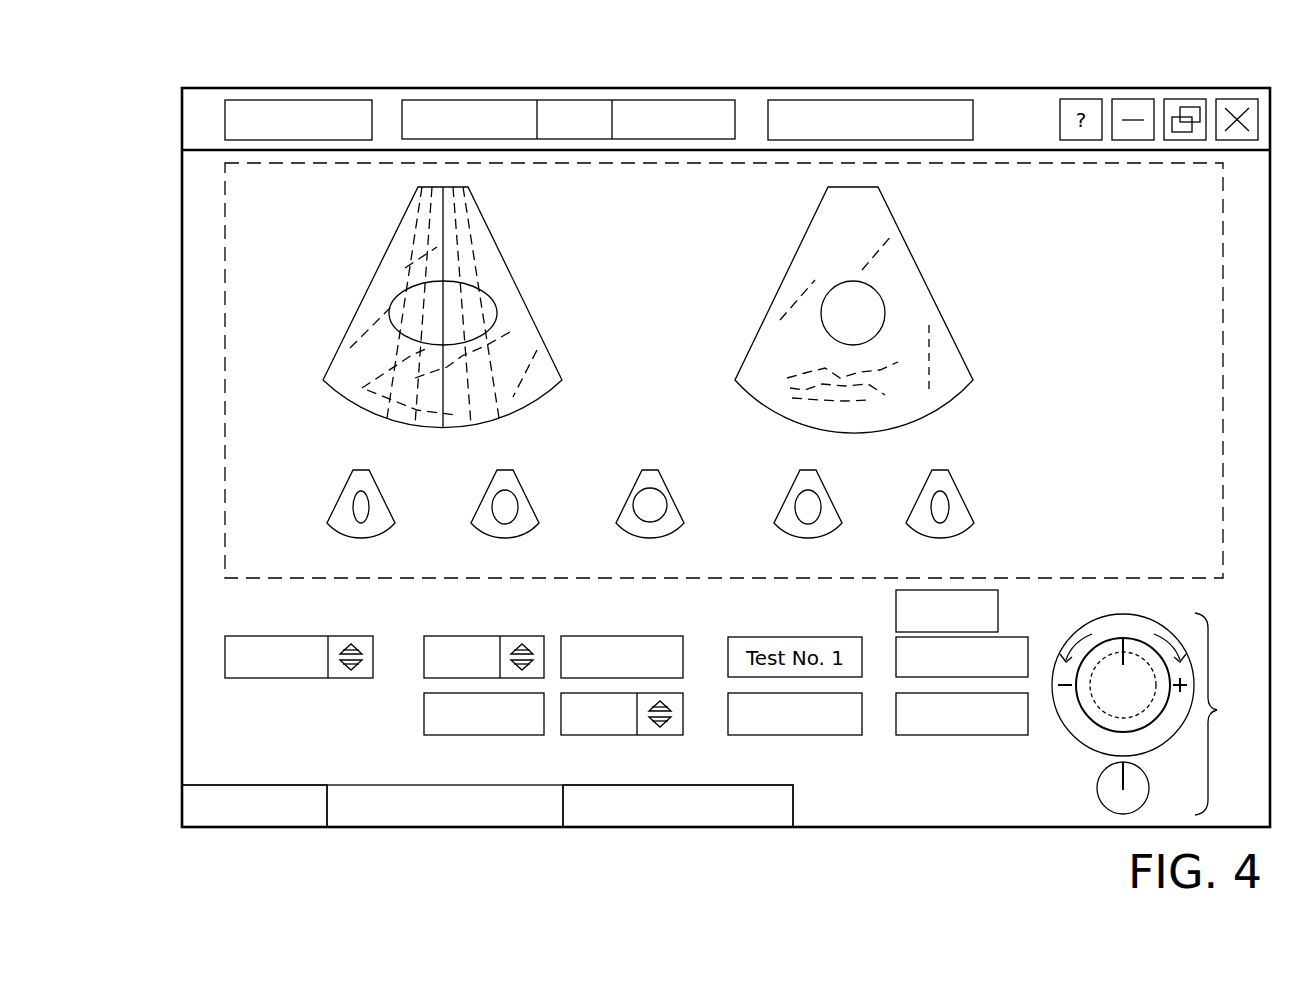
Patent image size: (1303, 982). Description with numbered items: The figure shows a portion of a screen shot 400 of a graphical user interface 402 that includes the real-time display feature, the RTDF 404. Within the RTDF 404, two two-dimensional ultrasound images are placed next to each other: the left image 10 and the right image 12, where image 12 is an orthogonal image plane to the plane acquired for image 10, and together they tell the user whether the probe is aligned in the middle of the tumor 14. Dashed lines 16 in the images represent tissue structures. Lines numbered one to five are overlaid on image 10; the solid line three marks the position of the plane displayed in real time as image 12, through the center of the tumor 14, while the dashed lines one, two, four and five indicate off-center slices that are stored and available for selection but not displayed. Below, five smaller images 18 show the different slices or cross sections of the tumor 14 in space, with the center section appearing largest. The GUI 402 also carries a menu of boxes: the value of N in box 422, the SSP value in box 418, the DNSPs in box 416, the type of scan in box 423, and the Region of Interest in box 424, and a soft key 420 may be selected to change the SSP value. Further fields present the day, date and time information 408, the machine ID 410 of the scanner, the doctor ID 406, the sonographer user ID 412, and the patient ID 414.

The screen shot 400 is at (154, 95).
The doctor ID 406 is at (302, 101).
The patient ID 414 is at (470, 101).
The user ID 412 is at (870, 101).
The RTDF 404 is at (224, 340).
The image 10 is at (505, 268).
The image 12 is at (443, 228).
The tumor 14 is at (390, 318).
The dashed lines 16 is at (537, 358).
The smaller images 18 is at (345, 497).
The box 424 is at (289, 679).
The box 423 is at (458, 637).
The box 422 is at (614, 736).
The box 416 is at (1010, 637).
The box 418 is at (968, 736).
The soft key 420 is at (1073, 735).
The graphical user interface 402 is at (262, 862).
The day, date, time information 408 is at (200, 820).
The machine ID 410 is at (671, 822).